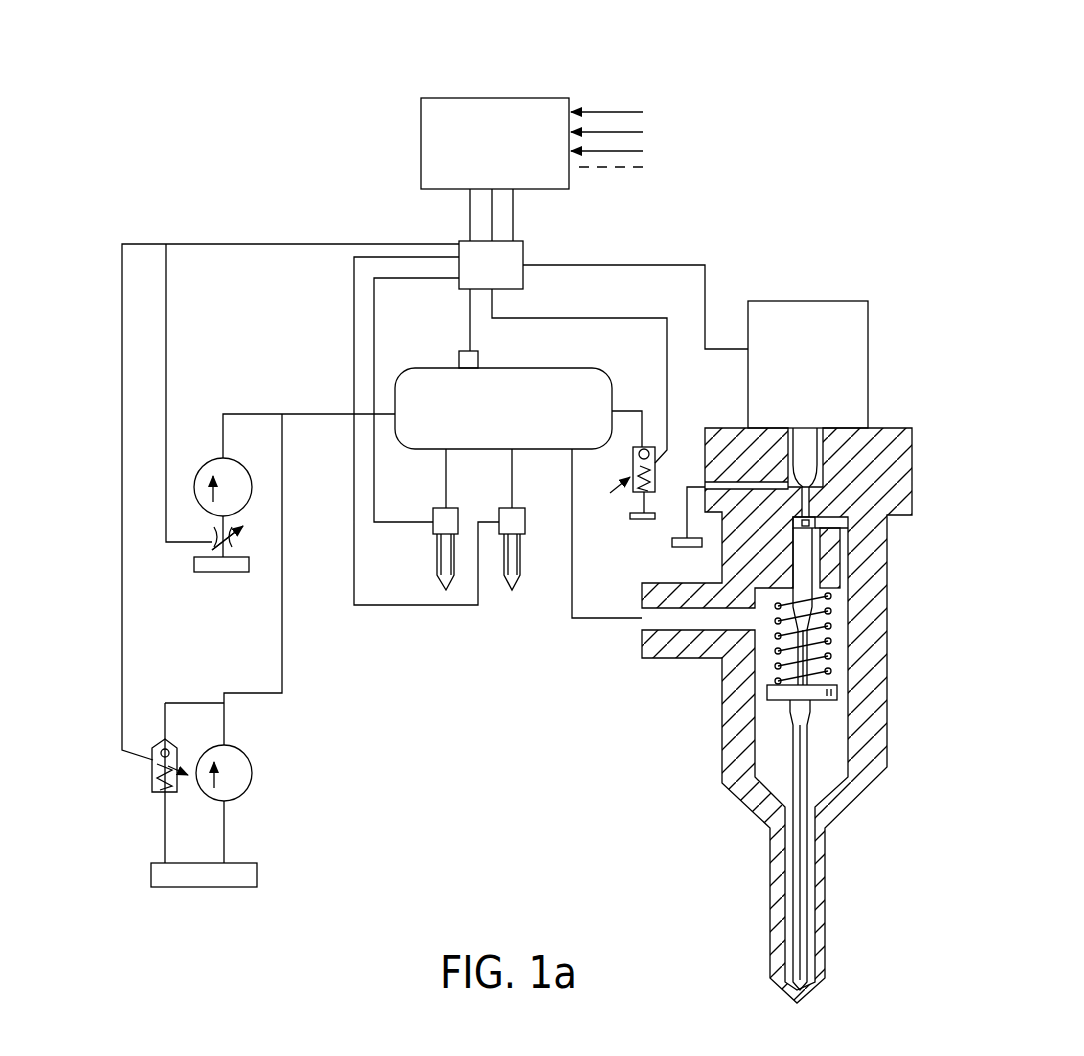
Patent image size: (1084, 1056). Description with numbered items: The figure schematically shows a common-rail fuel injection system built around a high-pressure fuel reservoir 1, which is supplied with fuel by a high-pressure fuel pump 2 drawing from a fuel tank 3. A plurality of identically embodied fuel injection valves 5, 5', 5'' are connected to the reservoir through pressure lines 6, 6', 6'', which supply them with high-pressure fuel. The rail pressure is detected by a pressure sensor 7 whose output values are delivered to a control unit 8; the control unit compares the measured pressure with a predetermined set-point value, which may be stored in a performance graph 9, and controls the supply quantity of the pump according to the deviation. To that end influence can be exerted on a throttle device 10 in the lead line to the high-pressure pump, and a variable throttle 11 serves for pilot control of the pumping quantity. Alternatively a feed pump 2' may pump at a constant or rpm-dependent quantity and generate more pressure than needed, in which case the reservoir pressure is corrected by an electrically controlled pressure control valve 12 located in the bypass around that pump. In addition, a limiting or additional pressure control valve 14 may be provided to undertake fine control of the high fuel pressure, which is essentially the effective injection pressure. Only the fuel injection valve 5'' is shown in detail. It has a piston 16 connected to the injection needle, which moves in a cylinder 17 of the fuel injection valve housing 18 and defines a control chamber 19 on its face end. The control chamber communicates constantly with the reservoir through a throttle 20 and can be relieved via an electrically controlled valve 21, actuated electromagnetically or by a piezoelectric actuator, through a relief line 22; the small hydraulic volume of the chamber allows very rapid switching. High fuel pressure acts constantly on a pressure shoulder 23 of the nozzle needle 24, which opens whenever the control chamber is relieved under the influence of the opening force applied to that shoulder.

The high-pressure fuel reservoir 1 is at (597, 382).
The high-pressure fuel pump 2 is at (219, 452).
The feed pump 2' is at (265, 764).
The fuel tank 3 is at (205, 568).
The fuel injection valve 5 is at (418, 549).
The fuel injection valve 5' is at (526, 555).
The fuel injection valve 5'' is at (799, 715).
The pressure line 6 is at (414, 478).
The pressure line 6' is at (533, 478).
The pressure line 6'' is at (607, 533).
The pressure sensor 7 is at (476, 358).
The control unit 8 is at (466, 248).
The performance graph 9 is at (440, 103).
The throttle device 10 is at (214, 538).
The variable throttle 11 is at (233, 546).
The pressure control valve 12 is at (157, 790).
The pressure control valve 14 is at (632, 467).
The piston 16 is at (812, 556).
The cylinder 17 is at (795, 573).
The fuel injection valve housing 18 is at (868, 776).
The control chamber 19 is at (815, 519).
The throttle 20 is at (814, 533).
The electrically controlled valve 21 is at (826, 450).
The relief line 22 is at (810, 500).
The pressure shoulder 23 is at (816, 617).
The nozzle needle 24 is at (803, 897).